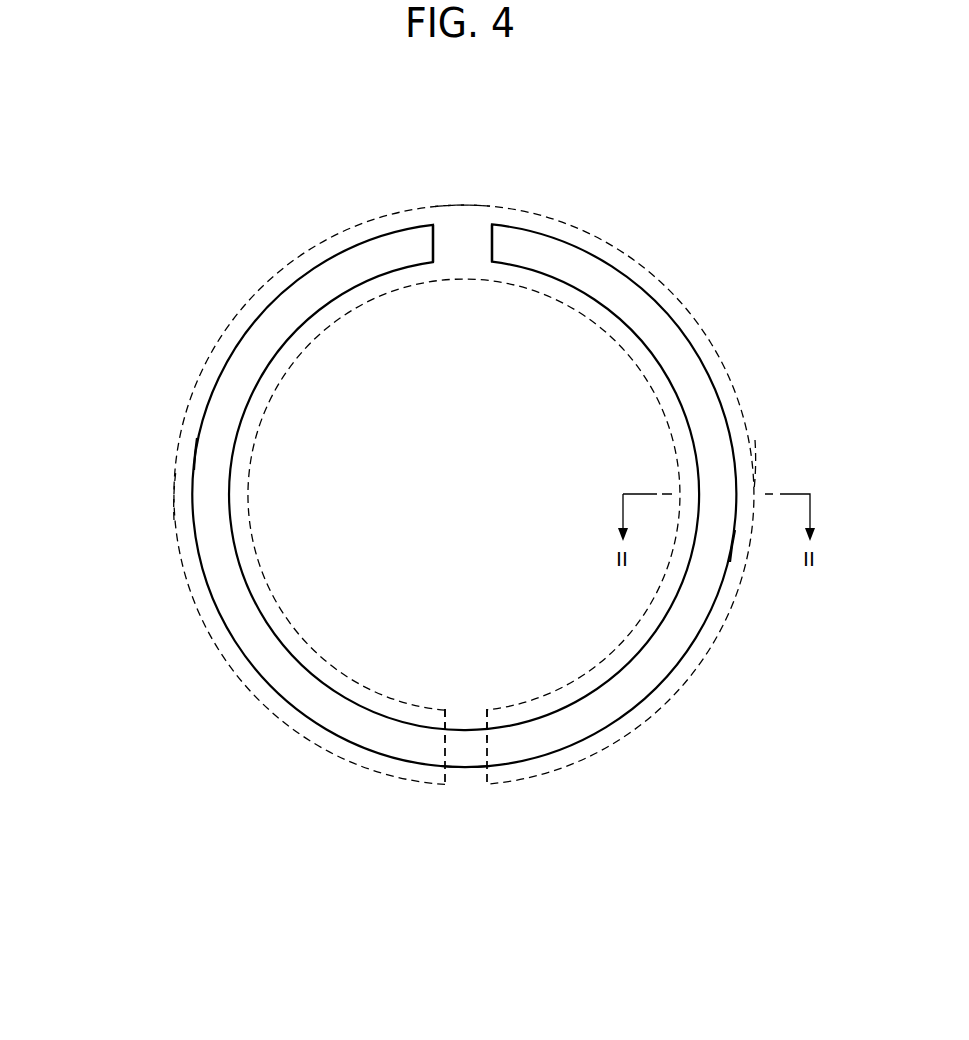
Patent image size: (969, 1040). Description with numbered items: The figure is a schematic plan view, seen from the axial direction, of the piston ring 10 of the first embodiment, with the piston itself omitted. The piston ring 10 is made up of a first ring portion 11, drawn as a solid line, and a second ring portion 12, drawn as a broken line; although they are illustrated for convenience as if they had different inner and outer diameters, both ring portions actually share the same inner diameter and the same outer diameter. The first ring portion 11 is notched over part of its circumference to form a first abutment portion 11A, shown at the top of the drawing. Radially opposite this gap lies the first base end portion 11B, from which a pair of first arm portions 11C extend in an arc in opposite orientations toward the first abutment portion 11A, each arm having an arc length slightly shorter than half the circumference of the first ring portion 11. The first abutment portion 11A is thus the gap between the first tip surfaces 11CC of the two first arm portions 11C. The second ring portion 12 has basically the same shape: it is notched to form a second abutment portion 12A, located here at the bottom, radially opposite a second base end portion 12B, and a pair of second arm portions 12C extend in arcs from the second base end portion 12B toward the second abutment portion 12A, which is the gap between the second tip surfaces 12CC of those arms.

The piston ring 10 is at (724, 229).
The first ring portion 11 is at (700, 355).
The first abutment portion 11A is at (469, 242).
The first base end portion 11B is at (456, 768).
The first arm portions 11C is at (197, 438).
The first tip surfaces 11CC is at (438, 243).
The second ring portion 12 is at (698, 668).
The second abutment portion 12A is at (467, 792).
The second base end portion 12B is at (457, 205).
The second arm portions 12C is at (173, 520).
The second tip surfaces 12CC is at (455, 710).